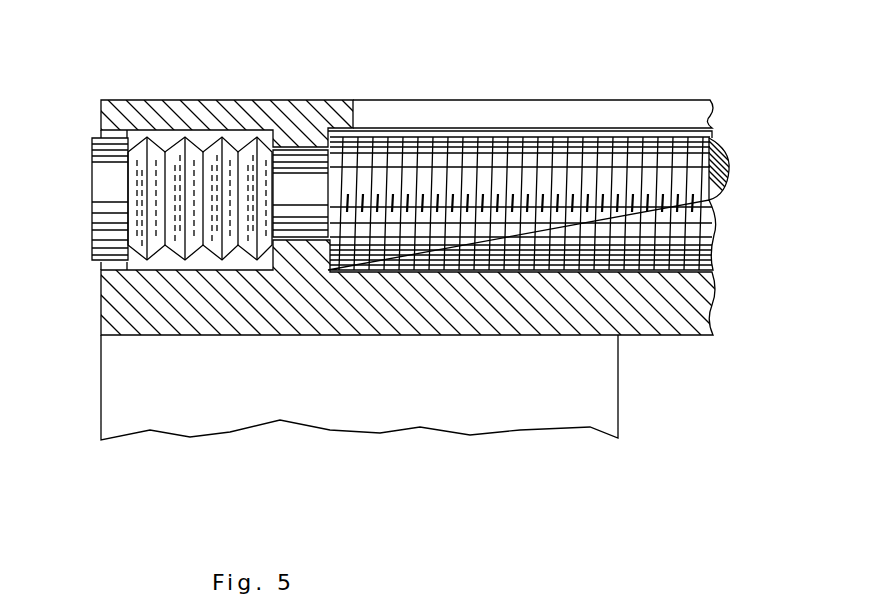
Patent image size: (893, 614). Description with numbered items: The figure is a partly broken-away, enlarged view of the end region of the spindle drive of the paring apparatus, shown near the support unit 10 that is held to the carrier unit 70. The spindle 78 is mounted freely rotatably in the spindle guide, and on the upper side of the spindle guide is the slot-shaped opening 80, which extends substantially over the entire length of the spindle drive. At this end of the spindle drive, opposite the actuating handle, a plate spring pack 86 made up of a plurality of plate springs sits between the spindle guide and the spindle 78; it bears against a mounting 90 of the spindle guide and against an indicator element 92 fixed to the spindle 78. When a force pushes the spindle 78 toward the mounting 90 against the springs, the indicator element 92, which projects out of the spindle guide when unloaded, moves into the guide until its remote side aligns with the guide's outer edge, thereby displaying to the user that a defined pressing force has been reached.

The support unit 10 is at (620, 371).
The carrier unit 70 is at (710, 302).
The spindle 78 is at (697, 180).
The slot-shaped opening 80 is at (528, 115).
The plate spring pack 86 is at (200, 147).
The mounting 90 is at (292, 147).
The indicator element 92 is at (97, 180).